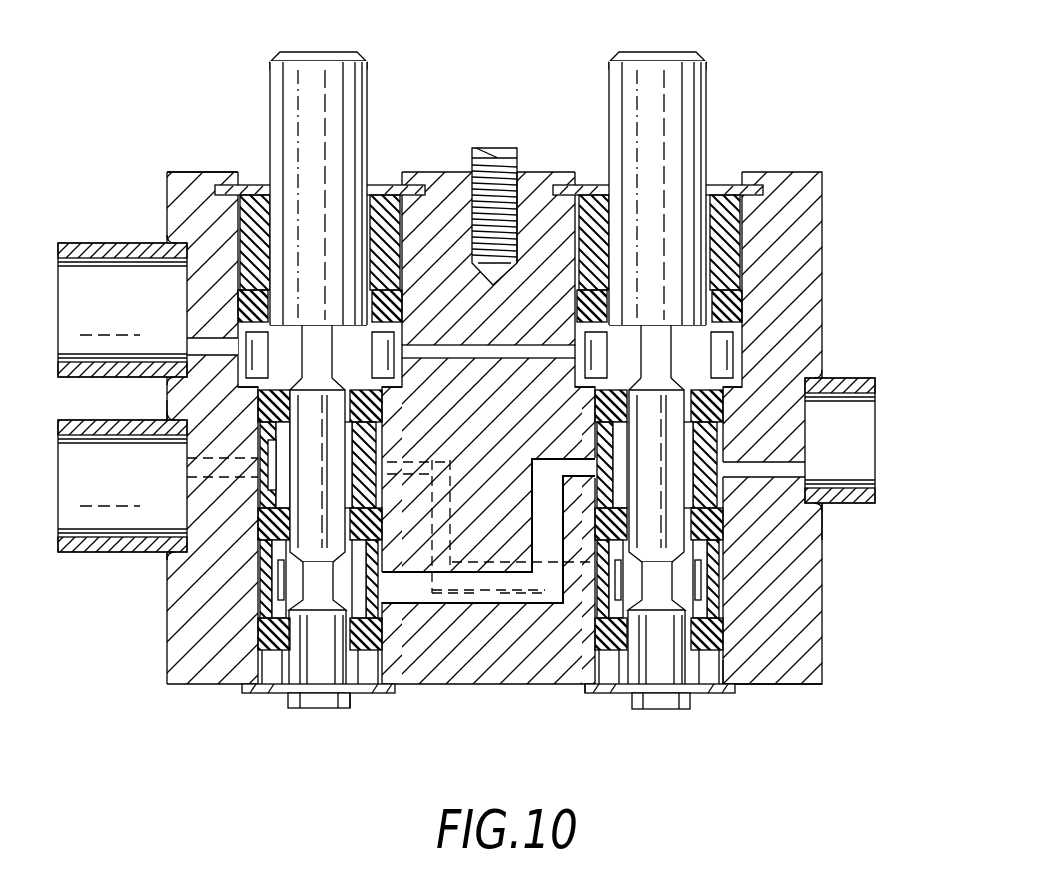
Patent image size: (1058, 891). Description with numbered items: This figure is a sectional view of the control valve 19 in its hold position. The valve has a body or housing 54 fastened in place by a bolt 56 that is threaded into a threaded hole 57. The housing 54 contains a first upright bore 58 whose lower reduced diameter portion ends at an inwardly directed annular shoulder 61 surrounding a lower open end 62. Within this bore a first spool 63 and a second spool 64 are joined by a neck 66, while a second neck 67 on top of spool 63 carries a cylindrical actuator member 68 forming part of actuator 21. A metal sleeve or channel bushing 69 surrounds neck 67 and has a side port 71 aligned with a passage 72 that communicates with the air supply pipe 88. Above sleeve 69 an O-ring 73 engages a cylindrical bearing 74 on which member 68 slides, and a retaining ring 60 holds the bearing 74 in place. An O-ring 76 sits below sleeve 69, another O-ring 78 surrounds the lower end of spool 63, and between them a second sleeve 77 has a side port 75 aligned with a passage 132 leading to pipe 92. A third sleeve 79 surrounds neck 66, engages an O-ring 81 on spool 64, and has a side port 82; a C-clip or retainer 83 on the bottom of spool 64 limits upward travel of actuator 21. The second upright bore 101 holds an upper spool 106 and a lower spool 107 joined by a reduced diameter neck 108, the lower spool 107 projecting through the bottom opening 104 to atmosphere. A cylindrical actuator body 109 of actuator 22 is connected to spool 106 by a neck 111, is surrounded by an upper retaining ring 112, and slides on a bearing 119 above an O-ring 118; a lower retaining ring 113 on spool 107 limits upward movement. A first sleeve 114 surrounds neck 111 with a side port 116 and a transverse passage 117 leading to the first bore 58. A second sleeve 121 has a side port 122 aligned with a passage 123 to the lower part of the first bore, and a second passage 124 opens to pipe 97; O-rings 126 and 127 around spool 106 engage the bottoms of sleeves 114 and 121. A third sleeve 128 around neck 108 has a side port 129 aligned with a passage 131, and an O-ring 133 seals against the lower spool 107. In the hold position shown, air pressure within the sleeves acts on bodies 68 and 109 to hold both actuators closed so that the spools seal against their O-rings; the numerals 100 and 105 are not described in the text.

The control valve 19 is at (822, 184).
The actuator 21 is at (275, 77).
The actuator 22 is at (704, 77).
The body or housing 54 is at (185, 176).
The bolt 56 is at (492, 148).
The threaded hole 57 is at (519, 195).
The first upright bore 58 is at (252, 190).
The retaining ring 60 is at (382, 188).
The annular shoulder 61 is at (243, 688).
The lower open end 62 is at (290, 698).
The first spool 63 is at (304, 482).
The second spool 64 is at (304, 660).
The neck 66 is at (368, 628).
The second neck 67 is at (334, 355).
The cylindrical actuator body or member 68 is at (299, 221).
The metal sleeve or channel bushing 69 is at (394, 350).
The side port 71 is at (201, 468).
The passage 72 is at (212, 346).
The O-ring 73 is at (390, 315).
The cylindrical bearing 74 is at (246, 250).
The side port 75 is at (266, 458).
The O-ring 76 is at (378, 405).
The second metal sleeve or channel bushing 77 is at (370, 488).
The O-ring 78 is at (262, 542).
The third metal sleeve or channel bushing 79 is at (268, 580).
The O-ring 81 is at (262, 652).
The side port 82 is at (270, 600).
The C-clip or retainer 83 is at (358, 694).
The air supply pipe 88 is at (92, 244).
The pipe 92 is at (105, 552).
The pipe 97 is at (855, 382).
The retaining plate 100 is at (738, 195).
The second upright bore 101 is at (728, 460).
The bottom opening 104 is at (652, 708).
The body bottom 105 is at (715, 676).
The upper spool 106 is at (639, 457).
The lower spool 107 is at (639, 660).
The reduced diameter neck 108 is at (730, 630).
The cylindrical actuator body 109 is at (636, 246).
The reduced diameter neck 111 is at (674, 357).
The upper retaining ring 112 is at (728, 190).
The lower retaining ring 113 is at (598, 696).
The first metal sleeve or channel bearing 114 is at (702, 362).
The side port 116 is at (592, 368).
The transverse passage 117 is at (482, 355).
The O-ring 118 is at (760, 325).
The bearing 119 is at (745, 300).
The second metal sleeve or channel bearing 121 is at (721, 492).
The side port 122 is at (562, 486).
The passage 123 is at (488, 589).
The second passage 124 is at (802, 498).
The O-ring 126 is at (726, 420).
The second O-ring 127 is at (725, 540).
The third sleeve or channel bearing 128 is at (722, 585).
The side port 129 is at (600, 608).
The passage 131 is at (510, 565).
The second passage 132 is at (190, 480).
The O-ring 133 is at (588, 688).